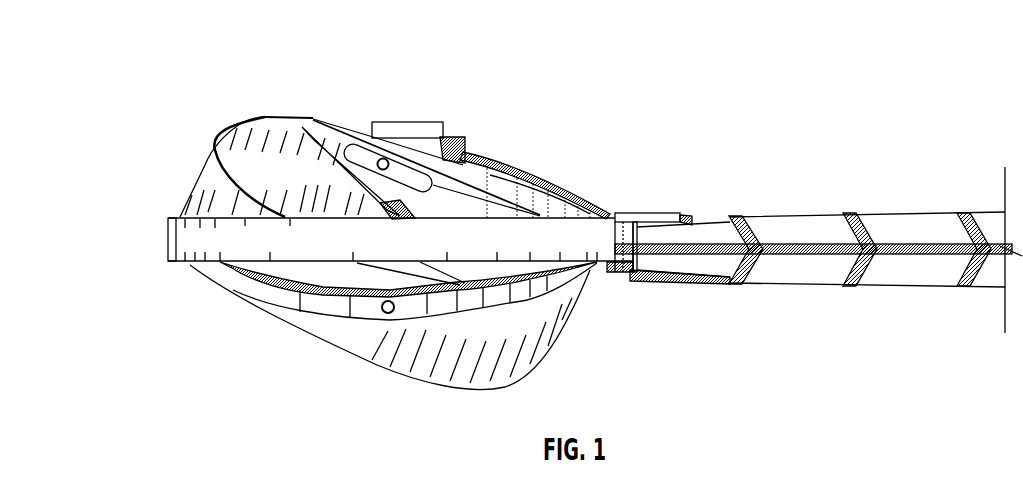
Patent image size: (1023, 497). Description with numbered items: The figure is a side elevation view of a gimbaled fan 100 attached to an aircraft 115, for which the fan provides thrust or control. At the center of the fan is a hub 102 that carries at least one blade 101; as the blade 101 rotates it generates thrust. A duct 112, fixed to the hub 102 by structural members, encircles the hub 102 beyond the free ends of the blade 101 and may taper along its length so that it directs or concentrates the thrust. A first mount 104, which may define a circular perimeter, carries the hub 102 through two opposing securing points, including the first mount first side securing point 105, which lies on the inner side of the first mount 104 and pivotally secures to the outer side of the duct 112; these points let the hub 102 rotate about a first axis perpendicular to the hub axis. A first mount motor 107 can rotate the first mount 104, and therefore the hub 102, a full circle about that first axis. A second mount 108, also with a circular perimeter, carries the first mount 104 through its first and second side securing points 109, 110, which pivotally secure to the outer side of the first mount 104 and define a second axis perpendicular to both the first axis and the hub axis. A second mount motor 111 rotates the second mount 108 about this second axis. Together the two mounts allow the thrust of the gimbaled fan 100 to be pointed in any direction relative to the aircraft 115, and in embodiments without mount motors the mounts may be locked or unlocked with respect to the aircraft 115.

The gimbaled fan 100 is at (216, 66).
The blade 101 is at (314, 122).
The hub 102 is at (386, 184).
The first mount 104 is at (529, 156).
The first mount first side securing point 105 is at (380, 329).
The first mount motor 107 is at (407, 116).
The second mount 108 is at (158, 253).
The second mount first side securing point 109 is at (158, 232).
The second mount second side securing point 110 is at (612, 211).
The second mount motor 111 is at (693, 218).
The duct 112 is at (212, 131).
The aircraft 115 is at (826, 208).